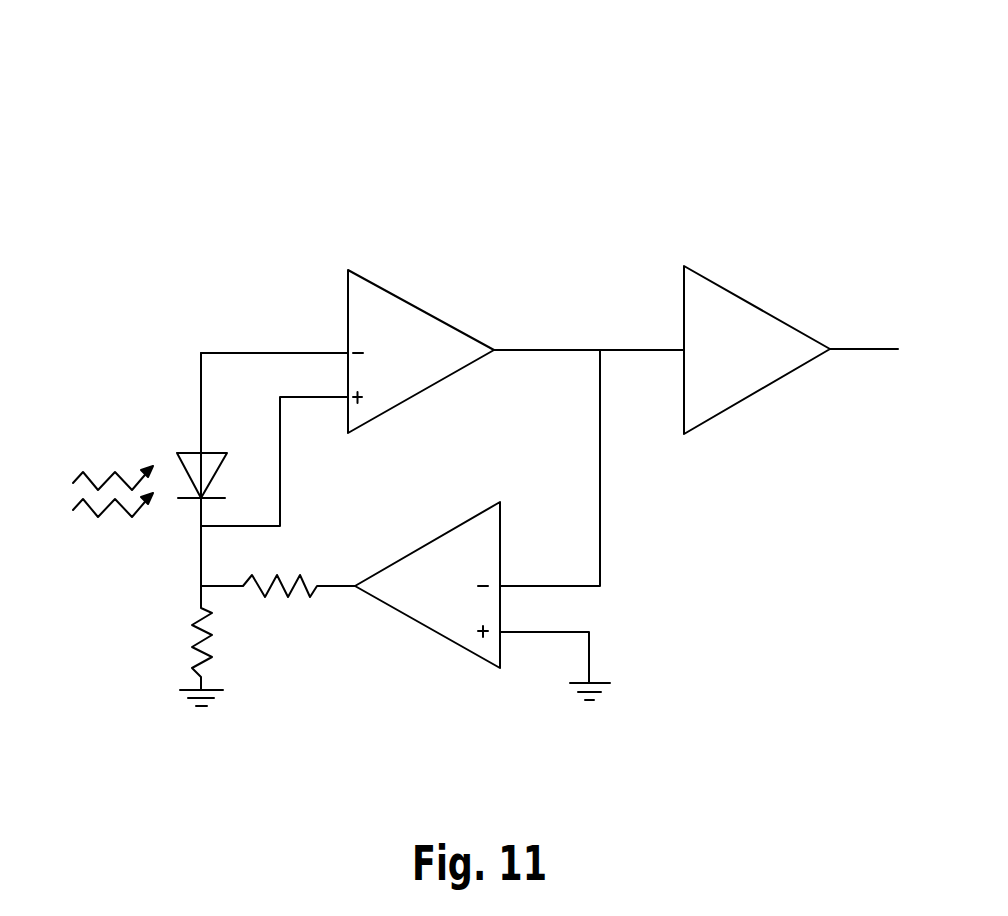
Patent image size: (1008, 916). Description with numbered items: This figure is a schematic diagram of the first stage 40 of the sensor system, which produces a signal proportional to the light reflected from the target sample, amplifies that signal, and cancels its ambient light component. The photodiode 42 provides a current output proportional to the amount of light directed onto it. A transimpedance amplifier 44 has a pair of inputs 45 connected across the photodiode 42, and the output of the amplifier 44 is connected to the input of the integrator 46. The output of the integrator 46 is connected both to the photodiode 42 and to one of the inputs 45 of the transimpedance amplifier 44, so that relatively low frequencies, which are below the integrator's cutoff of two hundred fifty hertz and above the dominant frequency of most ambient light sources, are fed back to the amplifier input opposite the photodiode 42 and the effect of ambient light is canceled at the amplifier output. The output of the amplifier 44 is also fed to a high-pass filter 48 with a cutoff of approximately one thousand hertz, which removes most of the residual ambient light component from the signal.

The first stage 40 is at (566, 160).
The photodiode 42 is at (195, 463).
The transimpedance amplifier 44 is at (418, 305).
The inputs 45 is at (348, 353).
The integrator 46 is at (439, 624).
The high-pass filter 48 is at (773, 312).